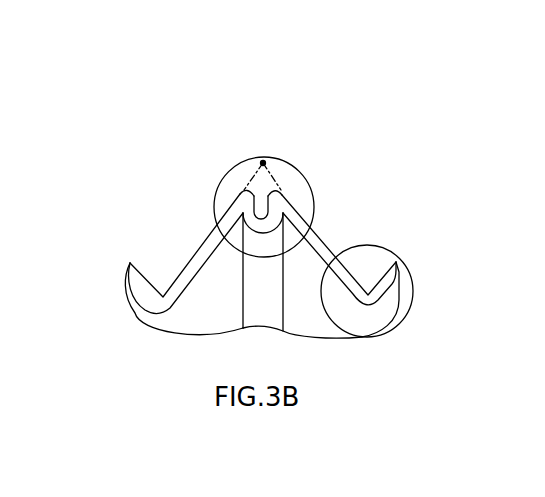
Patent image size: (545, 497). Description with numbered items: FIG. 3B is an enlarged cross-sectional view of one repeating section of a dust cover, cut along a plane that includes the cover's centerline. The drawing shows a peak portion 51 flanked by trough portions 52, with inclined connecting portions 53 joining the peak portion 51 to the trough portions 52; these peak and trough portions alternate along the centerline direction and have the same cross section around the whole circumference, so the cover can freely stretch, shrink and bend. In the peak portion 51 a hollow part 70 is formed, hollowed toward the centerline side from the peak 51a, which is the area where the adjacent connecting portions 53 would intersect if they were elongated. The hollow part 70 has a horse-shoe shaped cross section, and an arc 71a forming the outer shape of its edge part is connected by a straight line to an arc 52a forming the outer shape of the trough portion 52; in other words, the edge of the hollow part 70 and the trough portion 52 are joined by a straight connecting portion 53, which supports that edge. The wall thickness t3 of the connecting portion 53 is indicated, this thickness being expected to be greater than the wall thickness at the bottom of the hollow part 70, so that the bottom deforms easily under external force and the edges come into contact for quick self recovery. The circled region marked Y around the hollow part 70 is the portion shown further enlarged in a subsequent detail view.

The peak portion 51 is at (256, 199).
The peak 51a is at (263, 163).
The trough portion 52 is at (290, 272).
The arc 52a is at (162, 293).
The connecting portion 53 is at (187, 267).
The hollow part 70 is at (268, 187).
The arc 71a is at (243, 188).
The wall thickness t3 is at (228, 273).
The Y portion Y is at (298, 166).